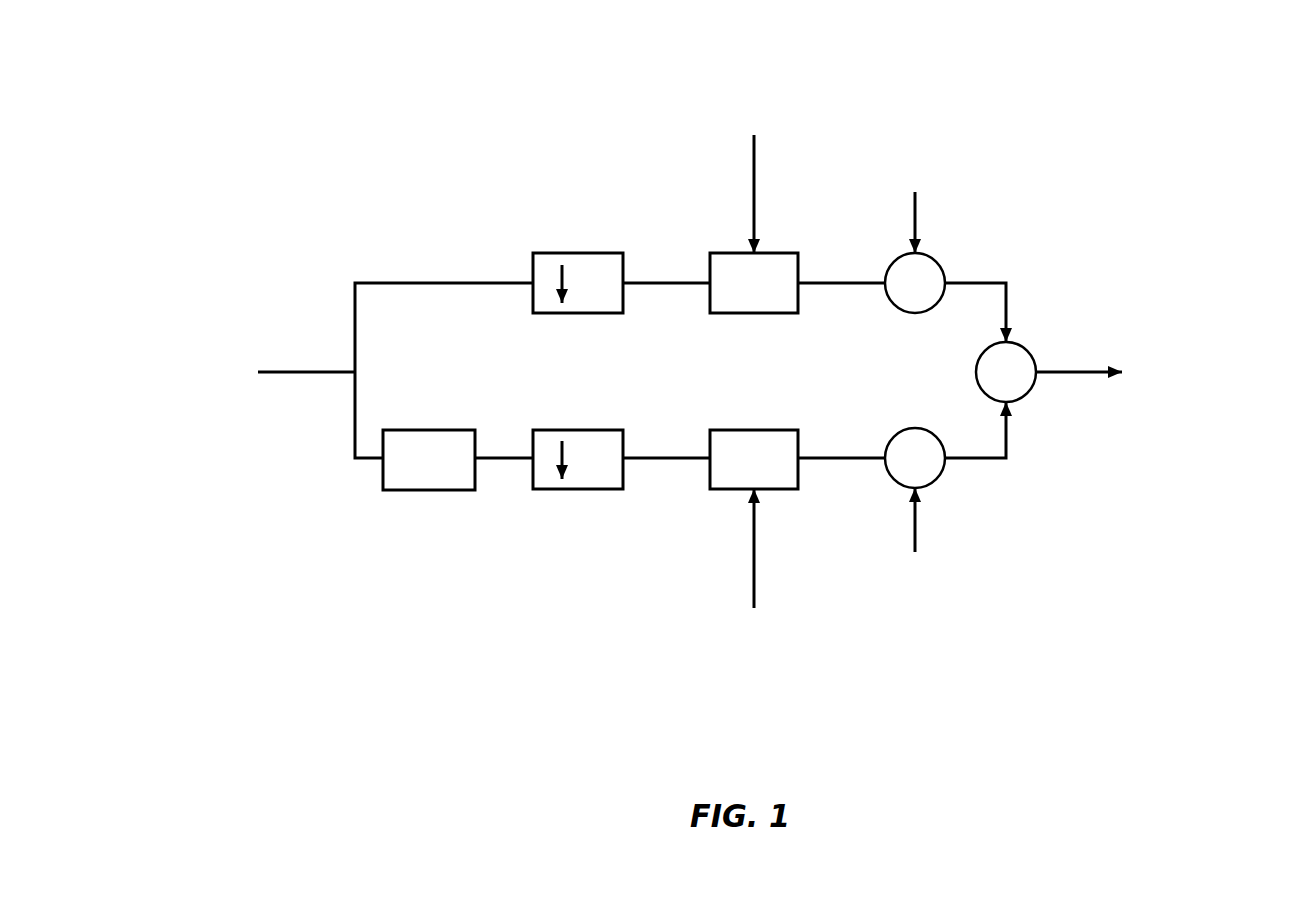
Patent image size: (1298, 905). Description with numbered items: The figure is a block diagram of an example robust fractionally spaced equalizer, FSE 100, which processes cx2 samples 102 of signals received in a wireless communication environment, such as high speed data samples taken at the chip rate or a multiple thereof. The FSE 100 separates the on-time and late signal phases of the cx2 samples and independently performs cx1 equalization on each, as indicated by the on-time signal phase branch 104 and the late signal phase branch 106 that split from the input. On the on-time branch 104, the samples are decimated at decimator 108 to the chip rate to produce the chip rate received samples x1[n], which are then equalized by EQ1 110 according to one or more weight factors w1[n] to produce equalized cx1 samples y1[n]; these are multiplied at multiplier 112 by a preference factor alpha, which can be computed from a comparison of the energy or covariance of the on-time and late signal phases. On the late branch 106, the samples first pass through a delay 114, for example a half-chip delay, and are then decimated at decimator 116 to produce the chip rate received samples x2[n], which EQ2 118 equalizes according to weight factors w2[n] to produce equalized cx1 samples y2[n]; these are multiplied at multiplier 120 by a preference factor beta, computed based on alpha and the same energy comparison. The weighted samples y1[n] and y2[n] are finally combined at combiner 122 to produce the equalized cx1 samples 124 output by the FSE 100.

The robust fractionally spaced equalizer 100 is at (828, 326).
The cx2 samples 102 is at (205, 326).
The on-time signal phase branch 104 is at (354, 330).
The late signal phase branch 106 is at (355, 425).
The decimator 108 is at (577, 253).
The EQ1 110 is at (755, 313).
The multiplier 112 is at (912, 313).
The delay 114 is at (428, 490).
The decimator 116 is at (577, 489).
The EQ2 118 is at (755, 430).
The multiplier 120 is at (915, 429).
The combiner 122 is at (1033, 355).
The equalized cx1 samples 124 is at (1193, 316).